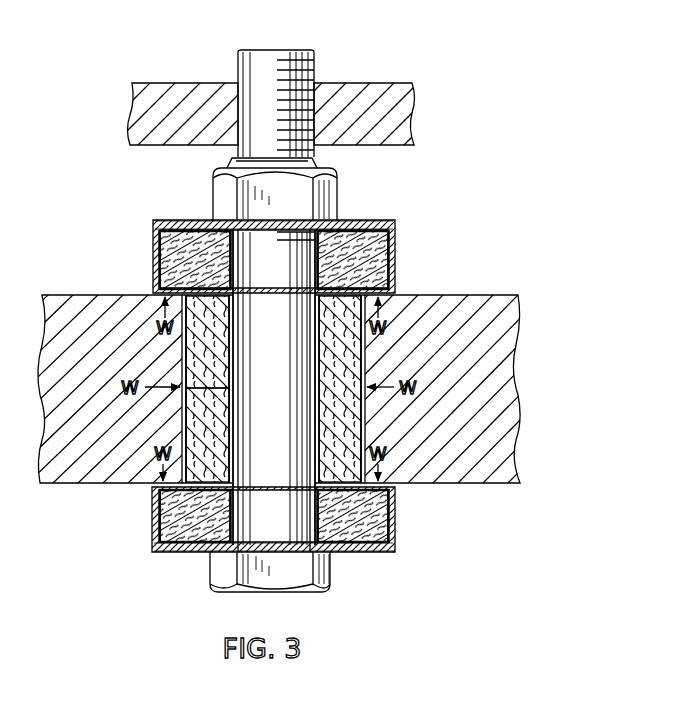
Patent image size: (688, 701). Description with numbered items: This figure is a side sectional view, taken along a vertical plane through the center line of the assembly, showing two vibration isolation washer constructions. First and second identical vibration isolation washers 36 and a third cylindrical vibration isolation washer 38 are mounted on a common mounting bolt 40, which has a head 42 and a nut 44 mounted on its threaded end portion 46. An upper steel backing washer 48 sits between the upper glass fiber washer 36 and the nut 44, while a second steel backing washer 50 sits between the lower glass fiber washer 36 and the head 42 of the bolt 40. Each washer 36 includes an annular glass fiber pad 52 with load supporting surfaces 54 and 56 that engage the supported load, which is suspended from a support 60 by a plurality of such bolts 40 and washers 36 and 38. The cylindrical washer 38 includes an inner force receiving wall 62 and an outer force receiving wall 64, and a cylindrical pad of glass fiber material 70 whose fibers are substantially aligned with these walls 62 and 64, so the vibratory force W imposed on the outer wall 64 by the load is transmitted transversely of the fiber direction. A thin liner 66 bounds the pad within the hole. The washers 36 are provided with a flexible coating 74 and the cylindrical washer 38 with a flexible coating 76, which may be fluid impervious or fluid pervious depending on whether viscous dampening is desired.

The vibration isolation washer 36 is at (399, 246).
The cylindrical vibration isolation washer 38 is at (362, 380).
The mounting bolt 40 is at (318, 46).
The head 42 is at (288, 576).
The nut 44 is at (333, 182).
The threaded end portion 46 is at (240, 52).
The upper steel backing washer 48 is at (375, 222).
The second steel backing washer 50 is at (345, 556).
The annular glass fiber pad 52 is at (163, 248).
The load supporting surface 54 is at (212, 298).
The load supporting surface 56 is at (213, 487).
The support 60 is at (366, 85).
The inner force receiving wall 62 is at (232, 393).
The outer force receiving wall 64 is at (365, 422).
The outer liner 66 is at (184, 372).
The cylindrical pad of glass fiber material 70 is at (196, 353).
The flexible coating 74 is at (391, 282).
The flexible coating 76 is at (190, 433).